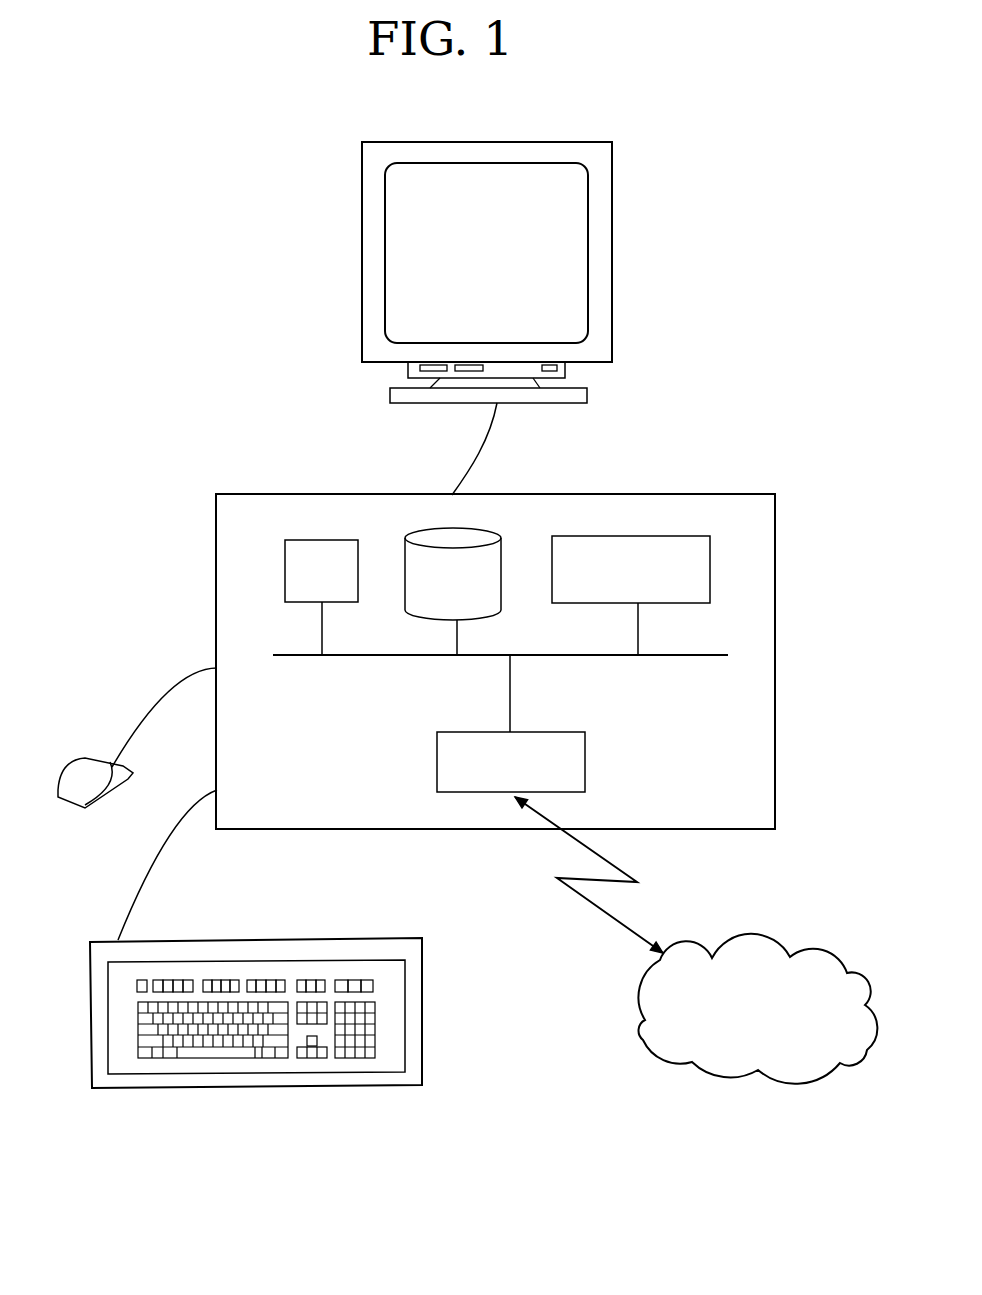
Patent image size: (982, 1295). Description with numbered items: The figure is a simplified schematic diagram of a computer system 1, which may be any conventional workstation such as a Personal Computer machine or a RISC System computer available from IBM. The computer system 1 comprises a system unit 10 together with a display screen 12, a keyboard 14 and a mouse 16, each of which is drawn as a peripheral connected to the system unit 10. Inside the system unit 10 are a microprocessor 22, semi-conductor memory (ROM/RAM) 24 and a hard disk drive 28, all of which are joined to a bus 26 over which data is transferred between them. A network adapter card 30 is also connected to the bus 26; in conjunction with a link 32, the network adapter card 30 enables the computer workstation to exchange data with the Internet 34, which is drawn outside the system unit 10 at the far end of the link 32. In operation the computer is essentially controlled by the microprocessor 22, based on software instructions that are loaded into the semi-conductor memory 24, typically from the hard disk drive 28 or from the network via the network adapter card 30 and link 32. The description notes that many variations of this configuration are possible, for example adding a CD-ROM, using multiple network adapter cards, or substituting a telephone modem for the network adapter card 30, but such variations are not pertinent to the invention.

The computer system 1 is at (176, 300).
The system unit 10 is at (718, 493).
The display screen 12 is at (362, 335).
The keyboard 14 is at (243, 942).
The mouse 16 is at (82, 758).
The microprocessor 22 is at (284, 566).
The semi-conductor memory (ROM/RAM) 24 is at (652, 535).
The bus 26 is at (682, 656).
The hard disk drive 28 is at (448, 528).
The network adapter card 30 is at (585, 752).
The link 32 is at (590, 903).
The Internet 34 is at (748, 935).